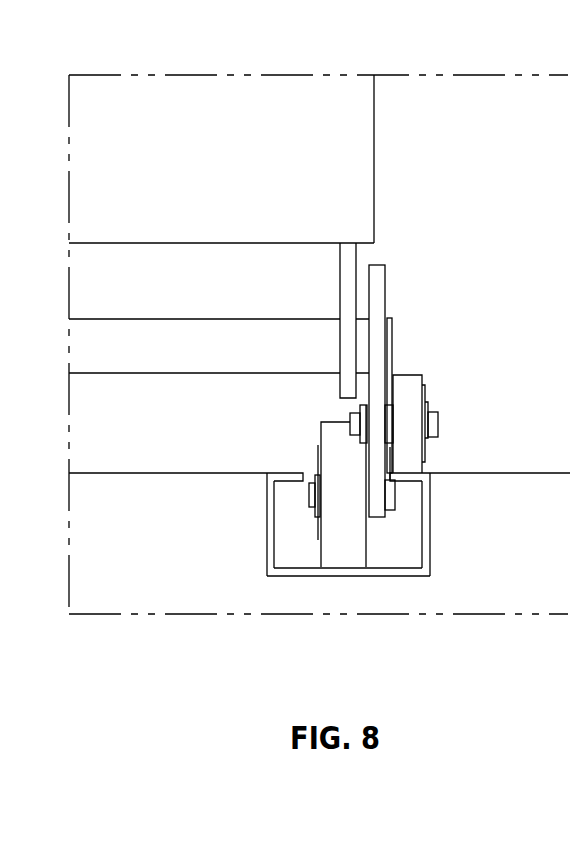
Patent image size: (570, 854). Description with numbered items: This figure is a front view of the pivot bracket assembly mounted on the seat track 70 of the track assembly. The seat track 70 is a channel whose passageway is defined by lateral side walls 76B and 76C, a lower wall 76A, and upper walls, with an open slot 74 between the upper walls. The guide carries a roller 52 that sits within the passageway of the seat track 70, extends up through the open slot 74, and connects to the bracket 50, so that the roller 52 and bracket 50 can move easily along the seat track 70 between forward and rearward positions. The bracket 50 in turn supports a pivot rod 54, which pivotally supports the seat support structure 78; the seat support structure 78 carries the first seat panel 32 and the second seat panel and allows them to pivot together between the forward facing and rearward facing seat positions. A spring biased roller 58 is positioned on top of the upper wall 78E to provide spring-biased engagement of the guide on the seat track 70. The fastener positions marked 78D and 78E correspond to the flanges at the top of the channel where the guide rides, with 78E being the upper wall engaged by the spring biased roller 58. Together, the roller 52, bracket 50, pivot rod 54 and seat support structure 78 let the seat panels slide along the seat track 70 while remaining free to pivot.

The first seat panel 32 is at (374, 137).
The bracket 50 is at (378, 278).
The roller 52 is at (345, 523).
The pivot rod 54 is at (320, 338).
The spring biased roller 58 is at (412, 383).
The seat track 70 is at (319, 565).
The open slot 74 is at (311, 473).
The lower wall 76A is at (378, 567).
The lateral side wall 76B is at (274, 498).
The lateral side wall 76C is at (426, 526).
The seat support structure 78 is at (349, 305).
The fastener 78D is at (272, 472).
The upper wall 78E is at (407, 472).